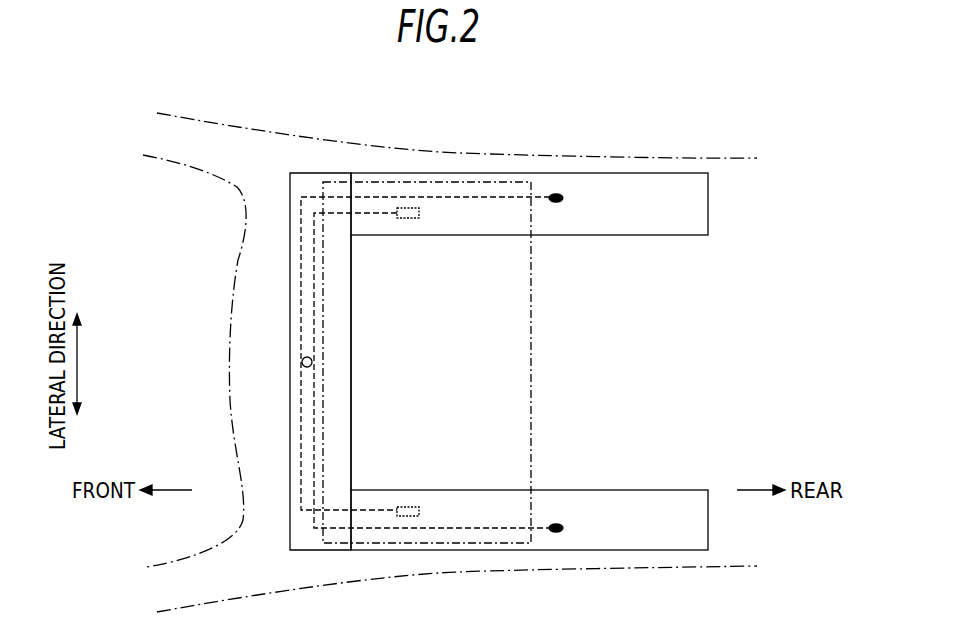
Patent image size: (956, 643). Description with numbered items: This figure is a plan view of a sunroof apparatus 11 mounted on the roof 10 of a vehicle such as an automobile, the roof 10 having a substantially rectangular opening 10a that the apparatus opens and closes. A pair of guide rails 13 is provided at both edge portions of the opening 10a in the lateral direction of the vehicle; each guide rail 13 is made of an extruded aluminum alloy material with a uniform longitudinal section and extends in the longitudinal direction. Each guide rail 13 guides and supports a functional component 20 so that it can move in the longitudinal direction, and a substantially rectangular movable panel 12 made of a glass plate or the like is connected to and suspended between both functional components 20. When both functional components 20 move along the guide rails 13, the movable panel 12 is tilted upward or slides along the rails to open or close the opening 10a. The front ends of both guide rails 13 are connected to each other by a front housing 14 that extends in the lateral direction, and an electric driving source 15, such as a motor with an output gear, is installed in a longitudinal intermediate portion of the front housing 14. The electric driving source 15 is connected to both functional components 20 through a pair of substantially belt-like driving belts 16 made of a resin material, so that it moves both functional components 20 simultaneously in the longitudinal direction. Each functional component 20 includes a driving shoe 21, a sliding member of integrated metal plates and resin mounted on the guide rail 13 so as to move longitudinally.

The roof 10 is at (526, 572).
The opening 10a is at (462, 373).
The sunroof apparatus 11 is at (618, 152).
The movable panel 12 is at (533, 362).
The guide rail 13 is at (483, 173).
The front housing 14 is at (287, 181).
The electric driving source 15 is at (303, 366).
The driving belt 16 is at (300, 433).
The functional component 20 is at (408, 219).
The driving shoe 21 is at (426, 362).